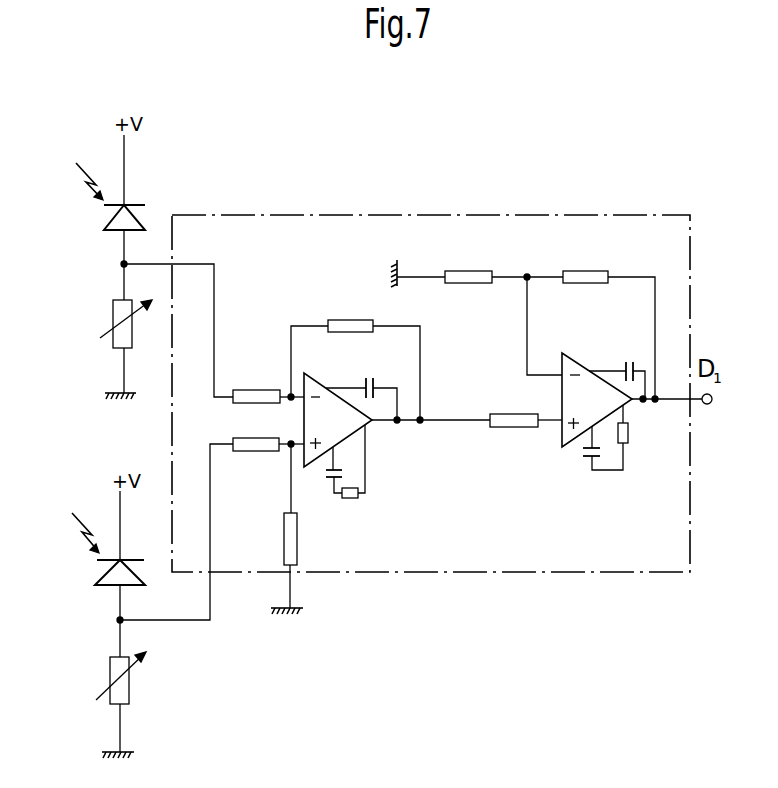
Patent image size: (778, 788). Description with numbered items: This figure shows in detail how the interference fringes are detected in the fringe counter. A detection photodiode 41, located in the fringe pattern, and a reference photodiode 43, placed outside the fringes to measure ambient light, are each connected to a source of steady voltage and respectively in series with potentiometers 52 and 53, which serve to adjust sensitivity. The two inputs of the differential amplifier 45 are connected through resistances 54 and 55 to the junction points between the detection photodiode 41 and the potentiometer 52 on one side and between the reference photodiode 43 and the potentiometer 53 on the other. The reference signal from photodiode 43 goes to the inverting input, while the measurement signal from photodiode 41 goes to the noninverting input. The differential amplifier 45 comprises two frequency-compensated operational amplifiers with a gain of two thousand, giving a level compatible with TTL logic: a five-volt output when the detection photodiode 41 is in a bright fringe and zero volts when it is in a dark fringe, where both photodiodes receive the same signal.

The detection photodiode 41 is at (97, 573).
The reference photodiode 43 is at (103, 222).
The differential amplifier 45 is at (513, 576).
The potentiometer 52 is at (120, 684).
The potentiometer 53 is at (113, 315).
The resistance 54 is at (253, 452).
The resistance 55 is at (255, 392).